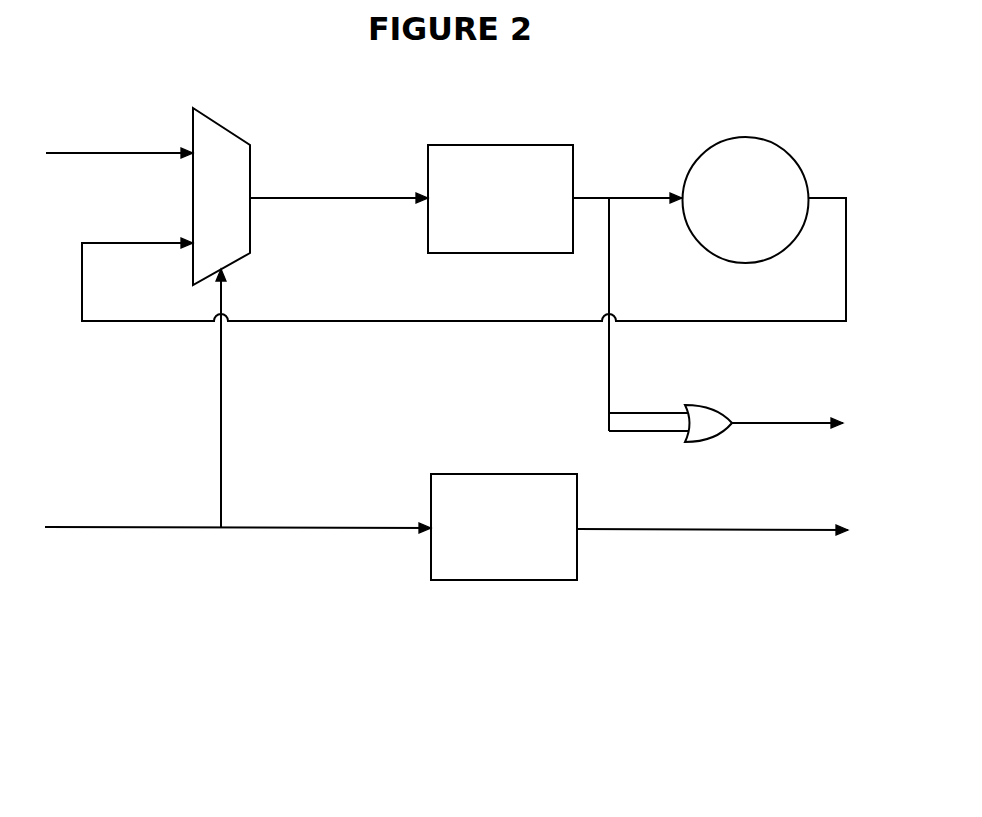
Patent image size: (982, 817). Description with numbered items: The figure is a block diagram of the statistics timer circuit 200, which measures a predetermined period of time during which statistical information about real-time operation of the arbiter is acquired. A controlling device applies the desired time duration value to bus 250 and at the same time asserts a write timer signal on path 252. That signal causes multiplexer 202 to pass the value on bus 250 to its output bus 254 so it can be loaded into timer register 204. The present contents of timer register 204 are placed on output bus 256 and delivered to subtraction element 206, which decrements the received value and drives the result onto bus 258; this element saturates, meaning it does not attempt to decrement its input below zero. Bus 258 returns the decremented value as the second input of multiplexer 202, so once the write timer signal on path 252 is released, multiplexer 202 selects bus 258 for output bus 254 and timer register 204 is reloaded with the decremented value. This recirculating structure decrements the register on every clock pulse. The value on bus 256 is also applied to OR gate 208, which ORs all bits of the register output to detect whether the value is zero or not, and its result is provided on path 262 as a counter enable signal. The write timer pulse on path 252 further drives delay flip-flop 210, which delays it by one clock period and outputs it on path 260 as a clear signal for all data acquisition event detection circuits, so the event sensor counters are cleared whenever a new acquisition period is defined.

The timer circuit 200 is at (553, 640).
The multiplexer 202 is at (253, 150).
The timer register 204 is at (578, 160).
The subtraction element 206 is at (797, 155).
The OR gate 208 is at (703, 403).
The delay flip-flop 210 is at (579, 510).
The bus 250 is at (83, 158).
The path 252 is at (247, 532).
The output bus 254 is at (318, 202).
The output bus 256 is at (611, 270).
The bus 258 is at (322, 327).
The path 260 is at (745, 533).
The path 262 is at (768, 427).